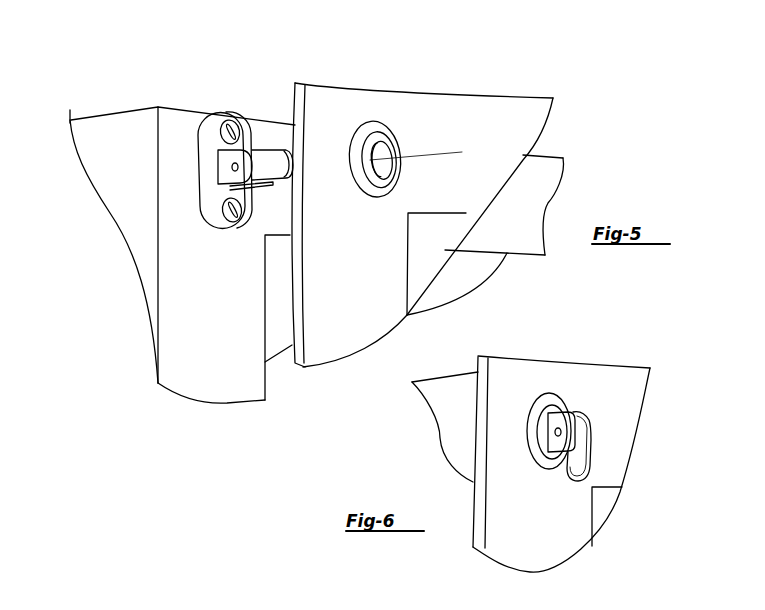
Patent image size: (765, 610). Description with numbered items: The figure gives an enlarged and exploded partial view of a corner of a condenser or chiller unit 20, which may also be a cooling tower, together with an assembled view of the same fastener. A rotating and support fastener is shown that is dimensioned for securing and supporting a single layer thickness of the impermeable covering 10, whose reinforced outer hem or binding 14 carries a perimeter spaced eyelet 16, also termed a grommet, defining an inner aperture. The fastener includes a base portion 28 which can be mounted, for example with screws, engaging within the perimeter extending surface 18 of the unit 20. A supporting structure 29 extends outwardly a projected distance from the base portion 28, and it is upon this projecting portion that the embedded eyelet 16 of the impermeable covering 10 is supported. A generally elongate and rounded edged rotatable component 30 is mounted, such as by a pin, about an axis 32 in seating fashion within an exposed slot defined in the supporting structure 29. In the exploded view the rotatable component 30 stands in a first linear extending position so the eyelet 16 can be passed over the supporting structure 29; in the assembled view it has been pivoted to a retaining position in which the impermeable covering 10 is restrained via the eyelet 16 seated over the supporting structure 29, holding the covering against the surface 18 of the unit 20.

In FIG. 5, the impermeable covering 10 is at (423, 250).
In FIG. 6, the impermeable covering 10 is at (603, 515).
In FIG. 5, the reinforced outer hem or binding 14 is at (442, 110).
In FIG. 6, the reinforced outer hem or binding 14 is at (610, 375).
In FIG. 5, the eyelet 16 is at (378, 126).
In FIG. 6, the eyelet 16 is at (563, 398).
In FIG. 5, the perimeter extending surface 18 is at (243, 375).
In FIG. 5, the condenser or chiller unit 20 is at (132, 203).
In FIG. 5, the base portion 28 is at (202, 167).
In FIG. 5, the supporting structure 29 is at (227, 160).
In FIG. 6, the supporting structure 29 is at (555, 420).
In FIG. 6, the rotatable component 30 is at (565, 468).
In FIG. 5, the axis 32 is at (232, 168).
In FIG. 6, the axis 32 is at (555, 433).